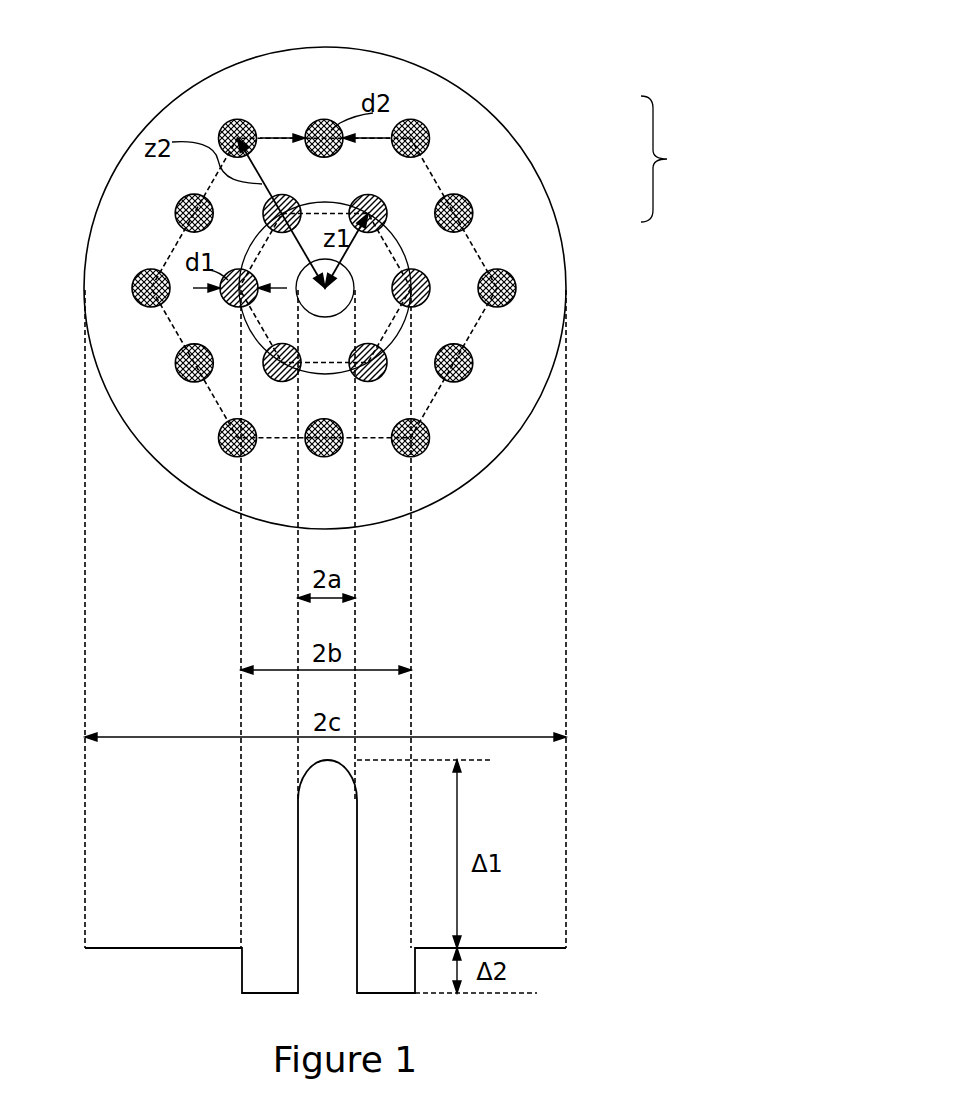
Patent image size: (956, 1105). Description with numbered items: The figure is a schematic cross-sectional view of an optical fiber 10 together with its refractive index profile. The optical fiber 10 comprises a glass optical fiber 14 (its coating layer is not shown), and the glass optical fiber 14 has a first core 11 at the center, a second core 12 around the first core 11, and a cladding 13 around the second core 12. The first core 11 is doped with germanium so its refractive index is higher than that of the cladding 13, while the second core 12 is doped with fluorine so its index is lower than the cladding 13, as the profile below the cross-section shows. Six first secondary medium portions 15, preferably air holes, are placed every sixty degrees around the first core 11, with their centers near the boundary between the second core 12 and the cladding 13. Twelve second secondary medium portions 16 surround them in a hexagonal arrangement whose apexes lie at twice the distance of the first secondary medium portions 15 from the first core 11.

The optical fiber 10 is at (782, 61).
The first core 11 is at (342, 290).
The second core 12 is at (373, 273).
The cladding 13 is at (540, 270).
The glass optical fiber 14 is at (677, 159).
The first secondary medium portions 15 is at (429, 296).
The second secondary medium portions 16 is at (470, 374).